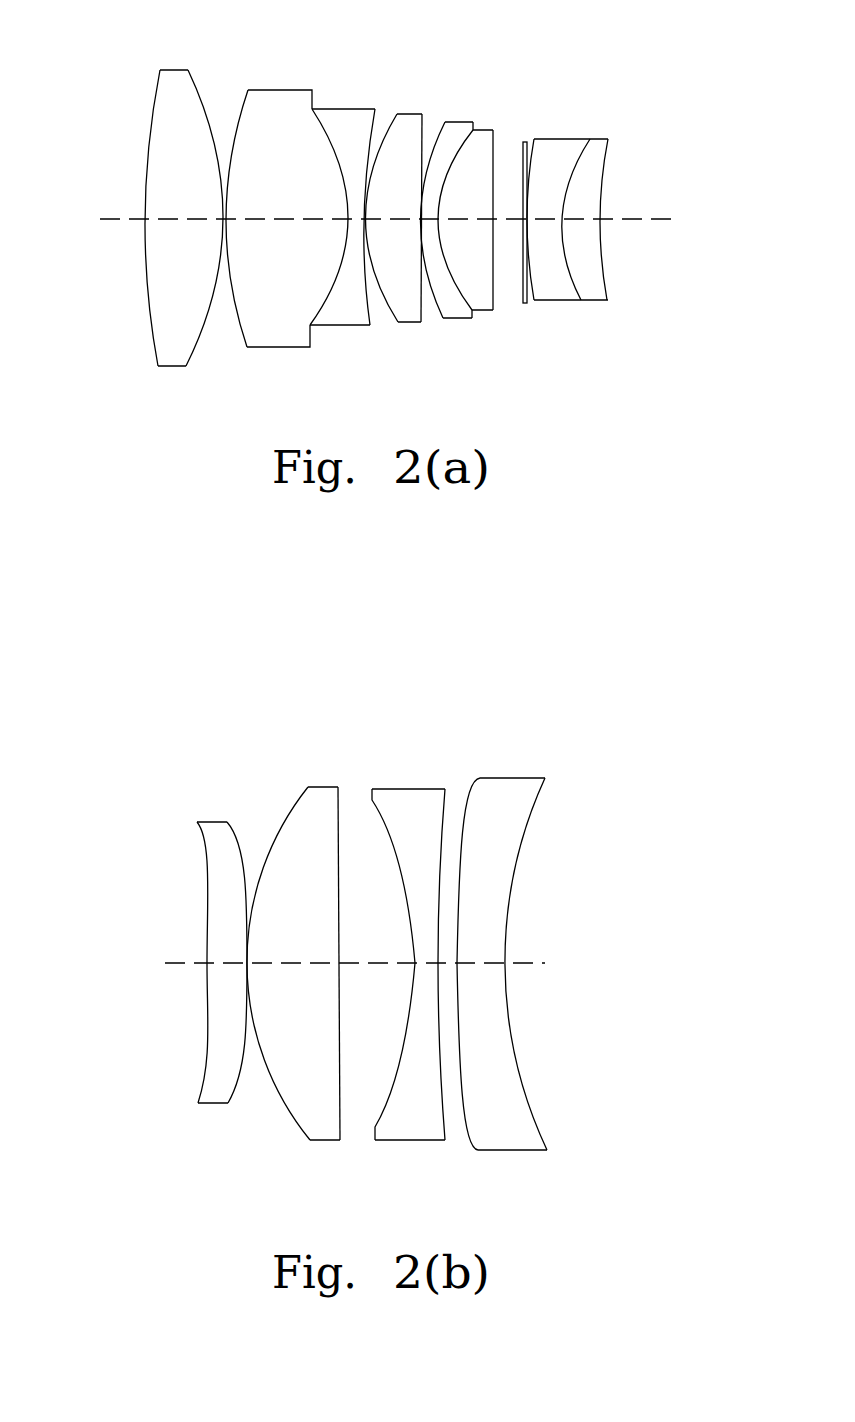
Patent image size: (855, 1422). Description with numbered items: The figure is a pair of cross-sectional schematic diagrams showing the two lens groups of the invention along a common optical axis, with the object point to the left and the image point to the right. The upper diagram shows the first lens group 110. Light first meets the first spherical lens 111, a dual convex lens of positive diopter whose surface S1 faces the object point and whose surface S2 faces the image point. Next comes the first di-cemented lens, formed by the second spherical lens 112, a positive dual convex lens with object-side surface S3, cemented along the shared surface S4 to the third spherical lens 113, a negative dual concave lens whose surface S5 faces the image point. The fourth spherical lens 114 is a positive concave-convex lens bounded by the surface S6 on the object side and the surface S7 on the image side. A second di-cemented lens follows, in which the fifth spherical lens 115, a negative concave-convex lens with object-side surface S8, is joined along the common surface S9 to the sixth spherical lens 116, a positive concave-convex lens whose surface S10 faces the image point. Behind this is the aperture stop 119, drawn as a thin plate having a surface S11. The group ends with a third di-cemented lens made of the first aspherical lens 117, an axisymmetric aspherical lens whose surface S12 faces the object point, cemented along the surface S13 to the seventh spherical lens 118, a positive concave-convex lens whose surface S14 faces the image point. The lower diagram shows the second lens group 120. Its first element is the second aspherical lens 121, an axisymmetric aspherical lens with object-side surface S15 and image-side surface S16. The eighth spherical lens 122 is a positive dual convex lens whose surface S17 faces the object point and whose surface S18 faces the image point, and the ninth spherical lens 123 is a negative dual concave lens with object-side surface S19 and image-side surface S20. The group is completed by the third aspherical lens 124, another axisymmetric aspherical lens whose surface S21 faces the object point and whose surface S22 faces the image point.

In FIG. 2A, the first lens group 110 is at (87, 38).
In FIG. 2A, the first spherical lens 111 is at (164, 223).
In FIG. 2A, the second spherical lens 112 is at (272, 223).
In FIG. 2A, the third spherical lens 113 is at (350, 269).
In FIG. 2A, the fourth spherical lens 114 is at (406, 223).
In FIG. 2A, the fifth spherical lens 115 is at (456, 223).
In FIG. 2A, the sixth spherical lens 116 is at (502, 223).
In FIG. 2A, the first aspherical lens 117 is at (610, 223).
In FIG. 2A, the seventh spherical lens 118 is at (637, 223).
In FIG. 2A, the aperture stop 119 is at (582, 223).
In FIG. 2A, the surface S1 is at (152, 338).
In FIG. 2A, the surface S2 is at (202, 100).
In FIG. 2A, the surface S3 is at (242, 335).
In FIG. 2A, the surface S4 is at (325, 128).
In FIG. 2A, the surface S5 is at (373, 315).
In FIG. 2A, the surface S6 is at (385, 118).
In FIG. 2A, the surface S7 is at (420, 312).
In FIG. 2A, the surface S8 is at (443, 122).
In FIG. 2A, the surface S9 is at (458, 307).
In FIG. 2A, the surface S10 is at (495, 142).
In FIG. 2A, the surface S11 is at (518, 290).
In FIG. 2A, the surface S12 is at (535, 153).
In FIG. 2A, the surface S13 is at (577, 287).
In FIG. 2A, the surface S14 is at (605, 163).
In FIG. 2B, the second lens group 120 is at (87, 782).
In FIG. 2B, the second aspherical lens 121 is at (188, 980).
In FIG. 2B, the eighth spherical lens 122 is at (295, 969).
In FIG. 2B, the ninth spherical lens 123 is at (406, 969).
In FIG. 2B, the third aspherical lens 124 is at (537, 987).
In FIG. 2B, the surface S15 is at (207, 1067).
In FIG. 2B, the surface S16 is at (240, 835).
In FIG. 2B, the surface S17 is at (283, 1108).
In FIG. 2B, the surface S18 is at (341, 823).
In FIG. 2B, the surface S19 is at (387, 1095).
In FIG. 2B, the surface S20 is at (445, 815).
In FIG. 2B, the surface S21 is at (458, 1120).
In FIG. 2B, the surface S22 is at (532, 818).